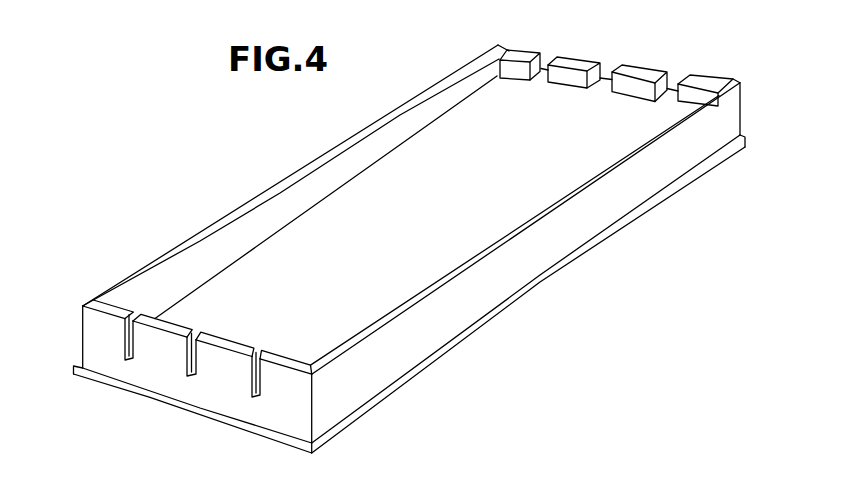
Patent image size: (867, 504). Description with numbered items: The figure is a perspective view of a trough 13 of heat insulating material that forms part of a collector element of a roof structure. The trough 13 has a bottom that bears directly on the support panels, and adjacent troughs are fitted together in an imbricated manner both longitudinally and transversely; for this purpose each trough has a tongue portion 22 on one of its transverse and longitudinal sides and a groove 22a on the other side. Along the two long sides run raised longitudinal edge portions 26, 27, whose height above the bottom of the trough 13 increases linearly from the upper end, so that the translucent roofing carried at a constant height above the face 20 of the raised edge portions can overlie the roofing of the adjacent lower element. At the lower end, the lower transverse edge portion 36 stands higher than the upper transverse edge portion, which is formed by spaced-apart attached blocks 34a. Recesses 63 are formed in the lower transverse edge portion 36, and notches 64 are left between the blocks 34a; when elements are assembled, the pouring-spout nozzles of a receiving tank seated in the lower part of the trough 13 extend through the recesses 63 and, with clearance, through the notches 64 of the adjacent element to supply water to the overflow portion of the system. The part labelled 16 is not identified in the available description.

The trough 13 is at (587, 255).
The housing body 16 is at (457, 130).
The face of the raised edge portions 20 is at (332, 357).
The tongue portion 22 is at (74, 366).
The groove 22a is at (173, 413).
The longitudinal edge portion 26 is at (300, 210).
The longitudinal edge portion 27 is at (527, 272).
The attached blocks 34a is at (685, 100).
The lower transverse edge portion 36 is at (227, 368).
The recesses 63 is at (187, 357).
The notches 64 is at (550, 57).